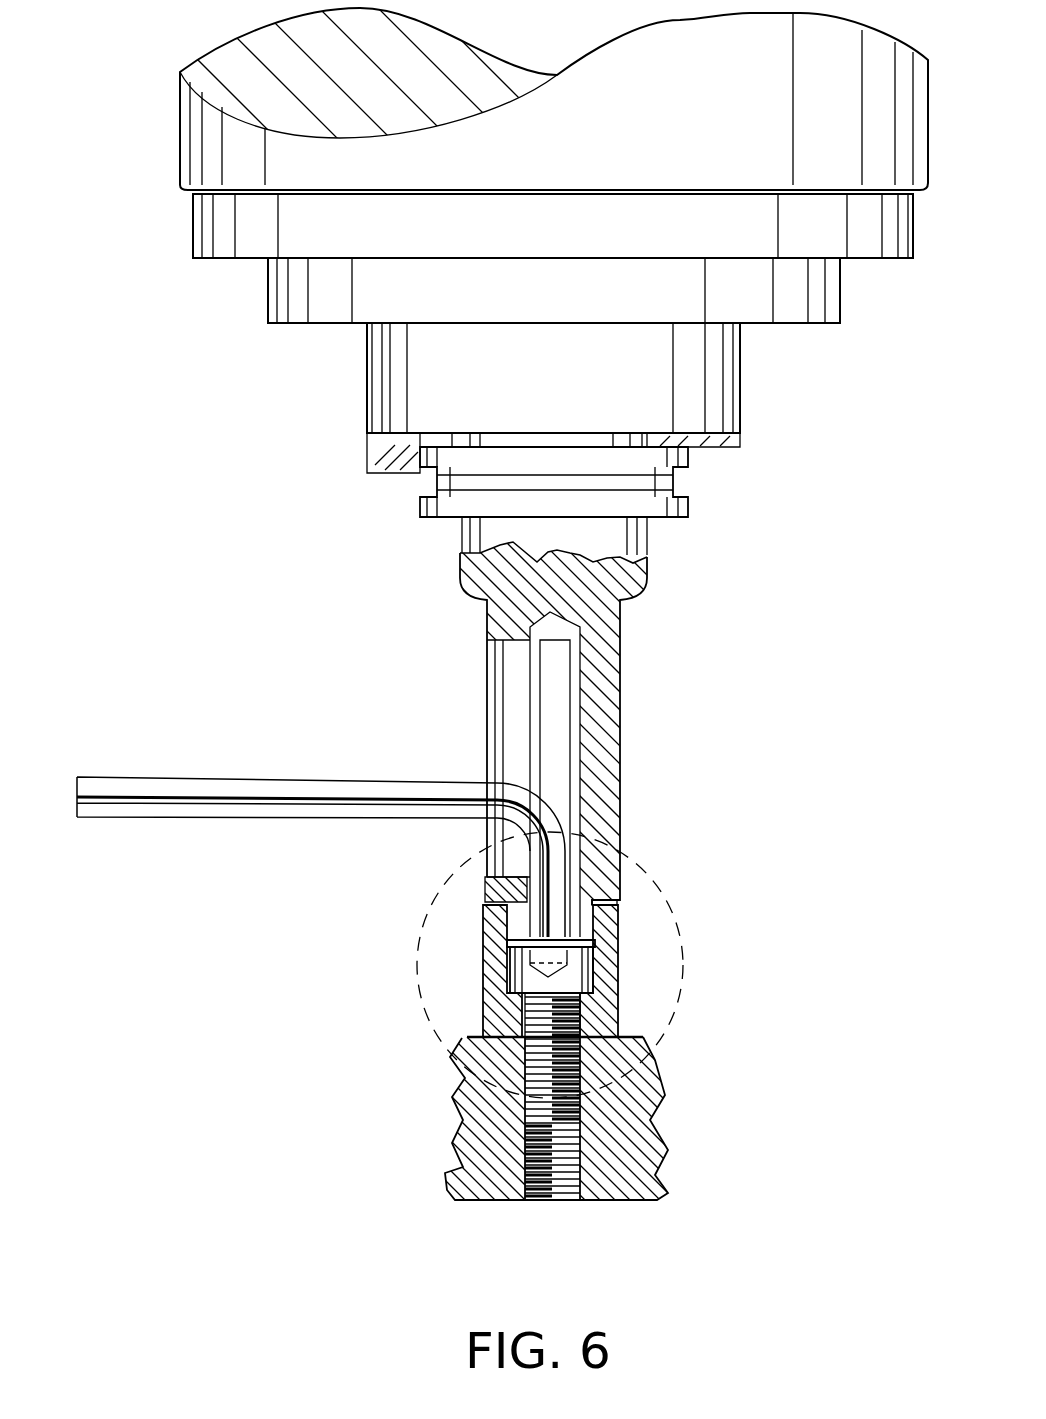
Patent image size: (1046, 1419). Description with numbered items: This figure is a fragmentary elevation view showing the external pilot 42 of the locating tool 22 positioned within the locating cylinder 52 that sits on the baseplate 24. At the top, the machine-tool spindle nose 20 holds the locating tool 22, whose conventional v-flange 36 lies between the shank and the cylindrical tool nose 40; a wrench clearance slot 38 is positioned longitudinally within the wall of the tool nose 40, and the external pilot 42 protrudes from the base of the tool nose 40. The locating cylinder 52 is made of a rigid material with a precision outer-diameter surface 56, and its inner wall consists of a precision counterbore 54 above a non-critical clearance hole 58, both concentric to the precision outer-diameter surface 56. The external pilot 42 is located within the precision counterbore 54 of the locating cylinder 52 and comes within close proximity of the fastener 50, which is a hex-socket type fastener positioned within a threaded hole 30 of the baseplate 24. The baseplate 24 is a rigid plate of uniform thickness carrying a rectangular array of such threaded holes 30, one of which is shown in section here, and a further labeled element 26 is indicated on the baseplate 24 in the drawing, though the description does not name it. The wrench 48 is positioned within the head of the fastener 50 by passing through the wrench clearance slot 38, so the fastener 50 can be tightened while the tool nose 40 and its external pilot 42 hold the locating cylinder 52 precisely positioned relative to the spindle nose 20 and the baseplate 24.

The machine-tool spindle nose 20 is at (357, 372).
The locating tool 22 is at (550, 738).
The baseplate 24 is at (503, 1117).
The threaded bore 26 is at (510, 1090).
The threaded hole 30 is at (570, 1155).
The v-flange 36 is at (430, 483).
The wrench clearance slot 38 is at (497, 752).
The tool nose 40 is at (607, 750).
The external pilot 42 is at (618, 910).
The wrench 48 is at (296, 788).
The fastener 50 is at (615, 967).
The locating cylinder 52 is at (625, 1000).
The precision counterbore 54 is at (490, 960).
The precision outer-diameter surface 56 is at (617, 945).
The non-critical clearance hole 58 is at (505, 1010).